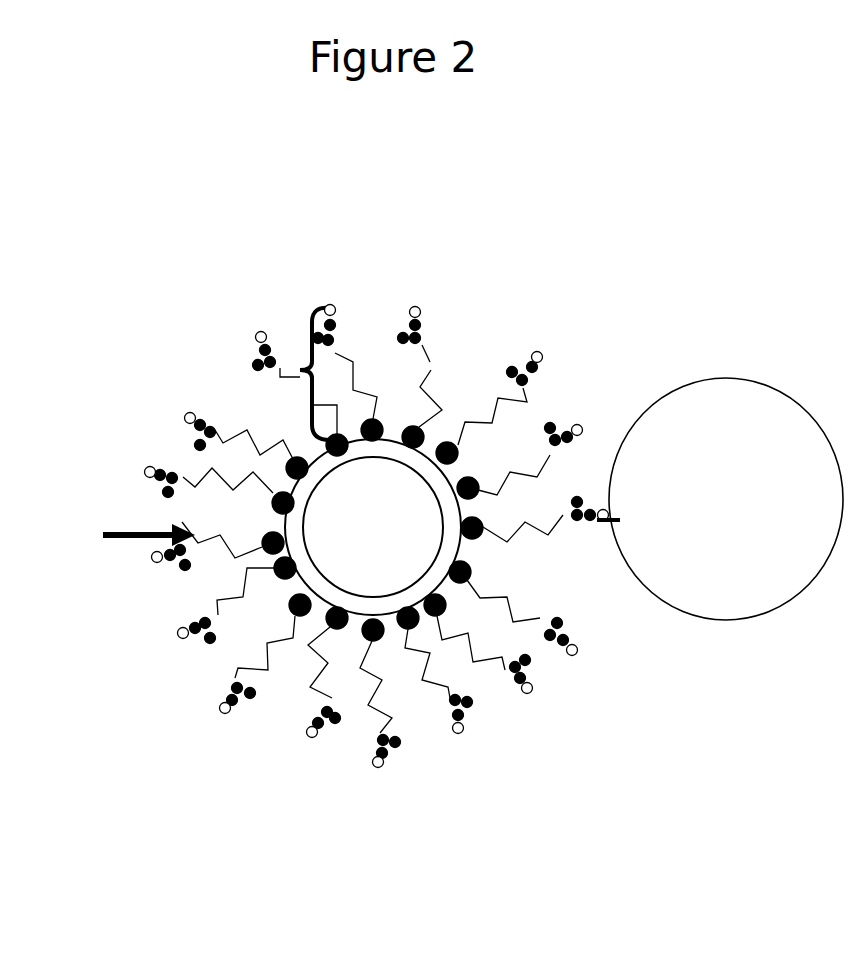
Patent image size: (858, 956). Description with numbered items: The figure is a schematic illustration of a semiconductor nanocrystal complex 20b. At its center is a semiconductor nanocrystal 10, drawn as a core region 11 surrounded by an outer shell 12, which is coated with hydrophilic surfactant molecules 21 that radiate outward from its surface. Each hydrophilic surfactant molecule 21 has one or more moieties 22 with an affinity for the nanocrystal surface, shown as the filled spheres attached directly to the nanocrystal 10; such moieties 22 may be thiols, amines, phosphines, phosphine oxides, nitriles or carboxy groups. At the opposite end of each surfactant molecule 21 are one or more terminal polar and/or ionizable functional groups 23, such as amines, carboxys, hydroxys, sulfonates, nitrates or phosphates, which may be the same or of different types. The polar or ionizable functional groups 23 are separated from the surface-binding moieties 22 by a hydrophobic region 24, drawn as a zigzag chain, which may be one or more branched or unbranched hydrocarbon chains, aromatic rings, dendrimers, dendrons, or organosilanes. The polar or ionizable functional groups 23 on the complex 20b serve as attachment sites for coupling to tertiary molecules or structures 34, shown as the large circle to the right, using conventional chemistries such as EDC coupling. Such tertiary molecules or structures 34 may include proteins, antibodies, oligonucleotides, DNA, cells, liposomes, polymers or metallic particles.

The semiconductor nanocrystal 10 is at (448, 449).
The nanoparticle core 11 is at (373, 527).
The nanoparticle shell 12 is at (379, 527).
The semiconductor nanocrystal complex 20b is at (361, 480).
The hydrophilic surfactant molecules 21 is at (300, 370).
The moieties 22 is at (435, 424).
The terminal polar and/or ionizable functional groups 23 is at (434, 303).
The hydrophobic region 24 is at (433, 369).
The tertiary molecules or structures 34 is at (726, 499).